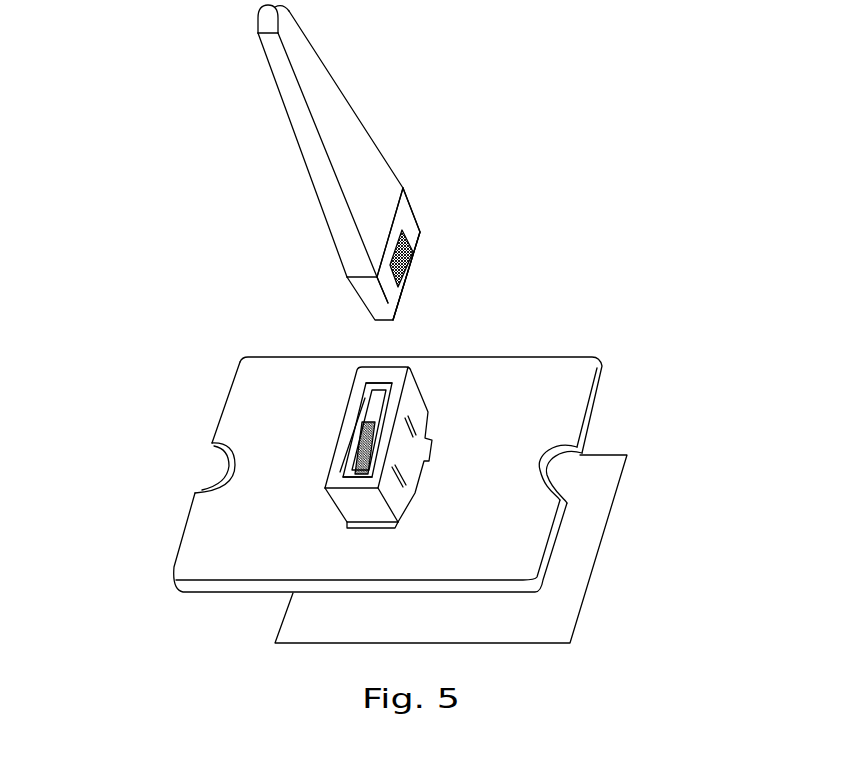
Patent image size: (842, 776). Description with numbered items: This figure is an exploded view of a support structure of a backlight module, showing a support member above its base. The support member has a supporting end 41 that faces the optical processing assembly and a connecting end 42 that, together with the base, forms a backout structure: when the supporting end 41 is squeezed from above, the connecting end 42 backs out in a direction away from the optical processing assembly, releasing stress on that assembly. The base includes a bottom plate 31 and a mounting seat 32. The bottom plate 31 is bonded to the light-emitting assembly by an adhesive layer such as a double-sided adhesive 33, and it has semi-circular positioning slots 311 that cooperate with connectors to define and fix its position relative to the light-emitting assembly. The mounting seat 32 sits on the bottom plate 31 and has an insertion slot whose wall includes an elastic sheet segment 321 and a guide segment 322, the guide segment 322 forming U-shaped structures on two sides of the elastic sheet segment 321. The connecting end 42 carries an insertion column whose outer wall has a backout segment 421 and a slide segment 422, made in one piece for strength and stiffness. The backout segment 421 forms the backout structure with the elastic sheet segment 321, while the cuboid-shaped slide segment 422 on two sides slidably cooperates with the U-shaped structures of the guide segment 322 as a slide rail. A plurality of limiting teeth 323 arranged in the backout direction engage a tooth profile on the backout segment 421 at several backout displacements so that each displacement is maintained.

The bottom plate 31 is at (553, 362).
The positioning slots 311 is at (222, 447).
The mounting seat 32 is at (417, 393).
The elastic sheet segment 321 is at (352, 435).
The guide segment 322 is at (370, 400).
The limiting teeth 323 is at (363, 457).
The double-sided adhesive 33 is at (572, 579).
The supporting end 41 is at (348, 116).
The connecting end 42 is at (525, 175).
The backout segment 421 is at (410, 263).
The slide segment 422 is at (414, 222).